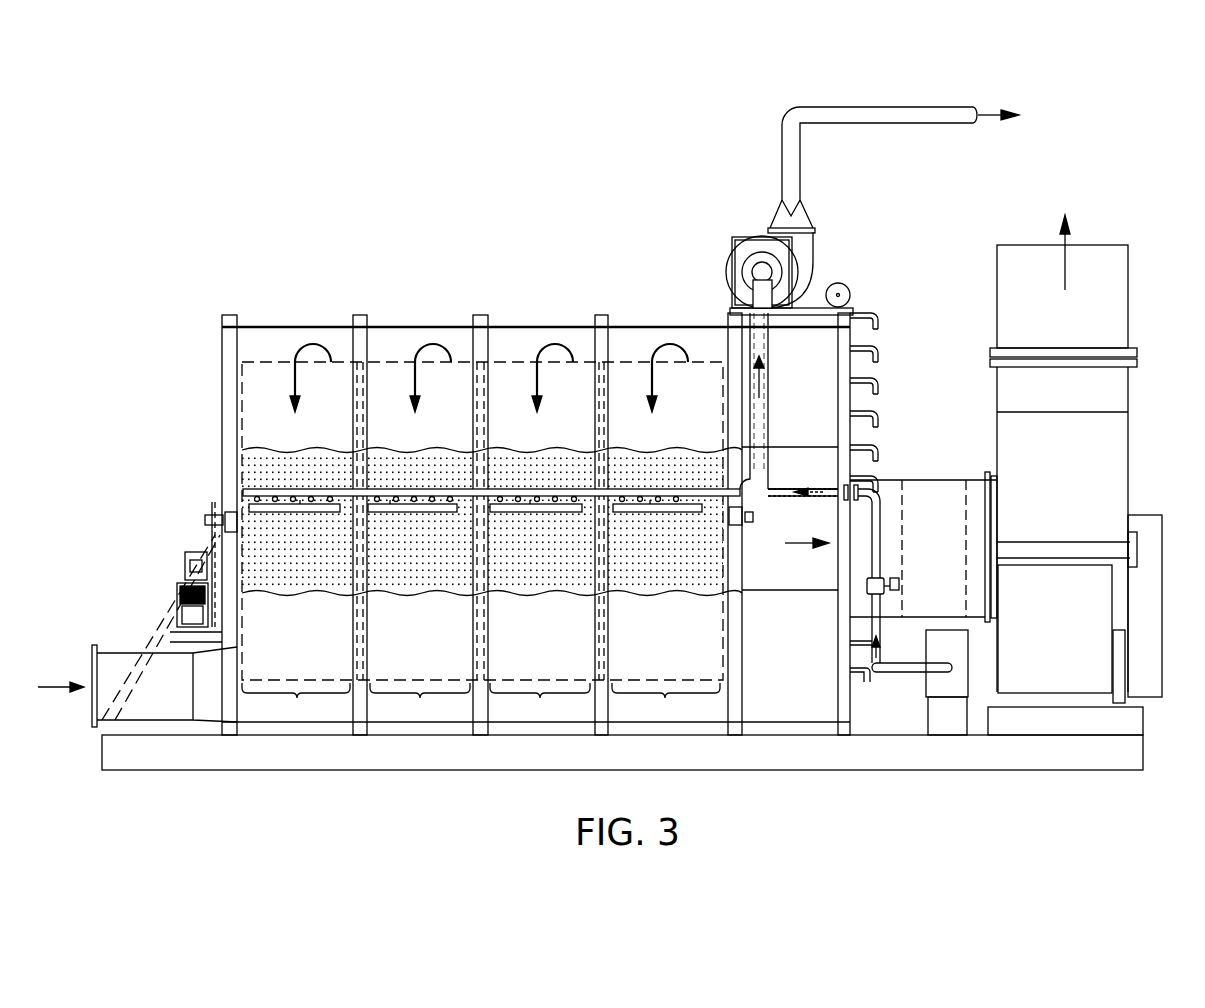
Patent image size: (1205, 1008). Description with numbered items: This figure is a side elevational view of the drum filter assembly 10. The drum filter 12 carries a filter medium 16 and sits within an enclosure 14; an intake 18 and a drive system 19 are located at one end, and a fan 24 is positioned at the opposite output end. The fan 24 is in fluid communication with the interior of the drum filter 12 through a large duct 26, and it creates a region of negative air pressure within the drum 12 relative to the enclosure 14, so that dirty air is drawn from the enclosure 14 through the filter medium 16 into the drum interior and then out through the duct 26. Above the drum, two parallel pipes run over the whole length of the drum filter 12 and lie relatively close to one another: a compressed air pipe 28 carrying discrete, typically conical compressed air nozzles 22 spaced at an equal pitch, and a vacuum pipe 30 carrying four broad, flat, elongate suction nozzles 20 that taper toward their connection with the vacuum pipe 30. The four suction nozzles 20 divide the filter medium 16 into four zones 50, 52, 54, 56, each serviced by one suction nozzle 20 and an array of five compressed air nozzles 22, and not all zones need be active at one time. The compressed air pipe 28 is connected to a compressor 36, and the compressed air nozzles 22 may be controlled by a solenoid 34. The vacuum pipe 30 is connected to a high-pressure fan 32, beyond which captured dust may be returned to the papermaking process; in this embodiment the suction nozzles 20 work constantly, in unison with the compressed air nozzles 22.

The drum filter assembly 10 is at (219, 262).
The drum filter 12 is at (516, 352).
The enclosure 14 is at (403, 327).
The filter medium 16 is at (620, 583).
The intake 18 is at (118, 653).
The drive system 19 is at (190, 552).
The suction nozzles 20 is at (425, 512).
The compressed air nozzles 22 is at (255, 489).
The fan 24 is at (1118, 448).
The duct 26 is at (930, 480).
The compressed air pipe 28 is at (790, 485).
The vacuum pipe 30 is at (757, 498).
The high-pressure fan 32 is at (805, 262).
The solenoid 34 is at (890, 594).
The compressor 36 is at (928, 683).
The first zone 50 is at (296, 702).
The second zone 52 is at (420, 702).
The third zone 54 is at (540, 702).
The fourth zone 56 is at (666, 702).